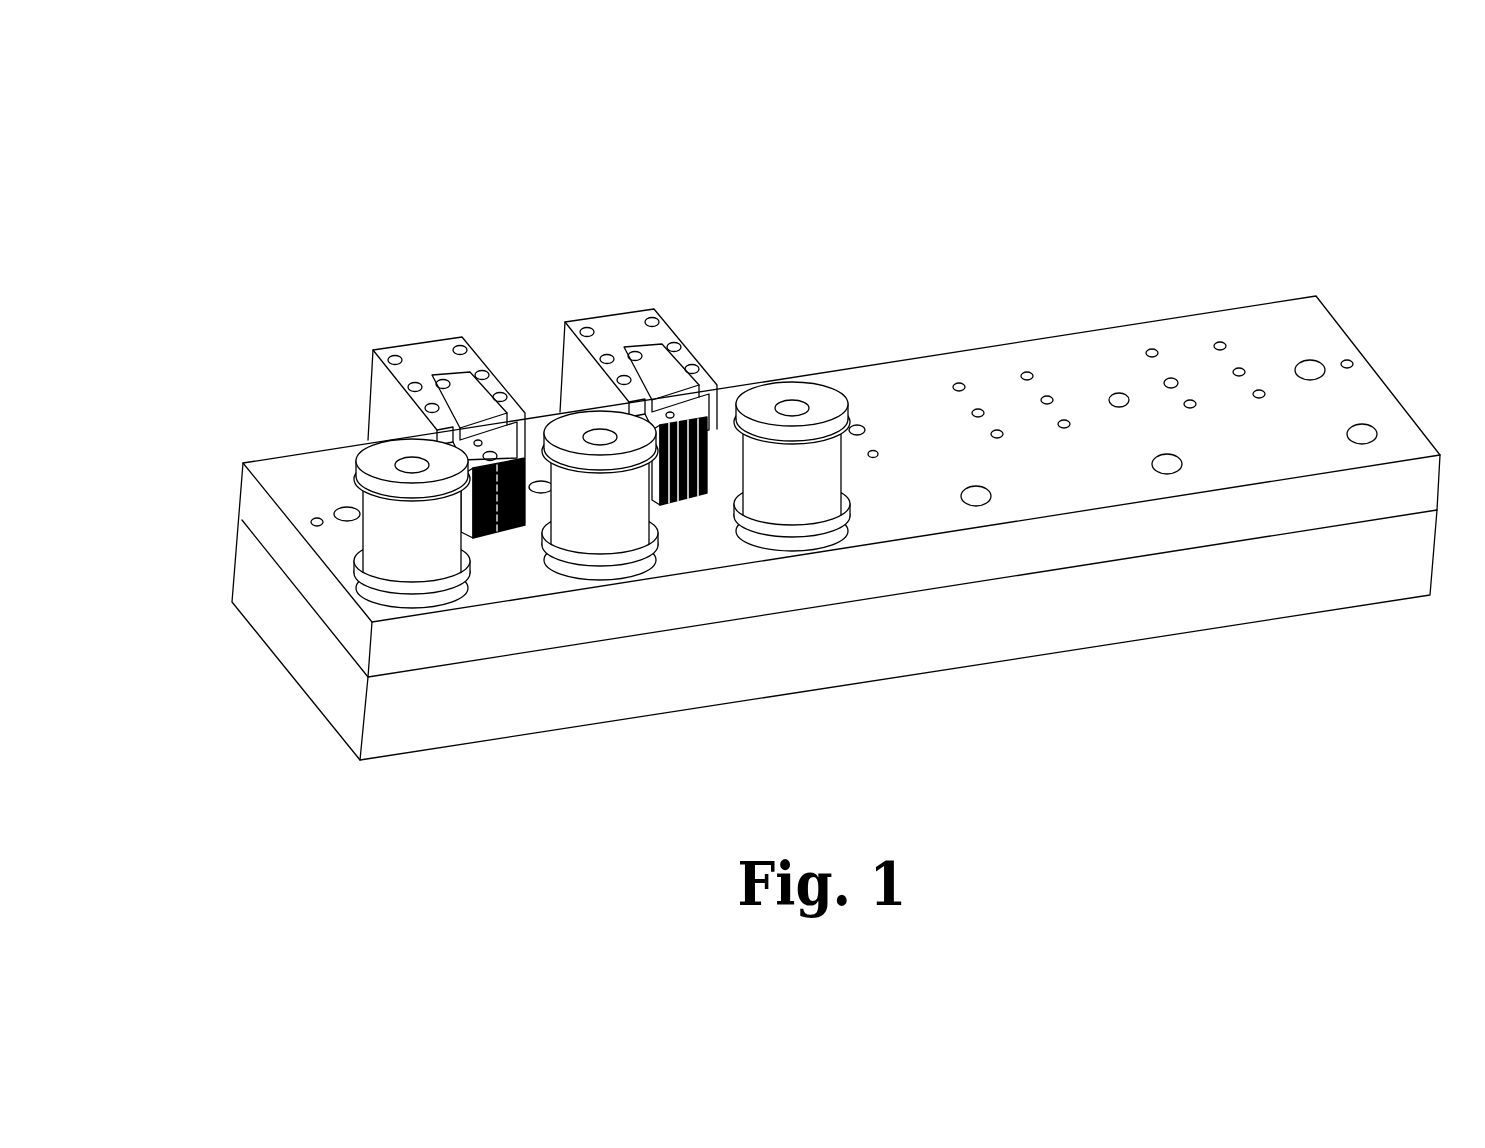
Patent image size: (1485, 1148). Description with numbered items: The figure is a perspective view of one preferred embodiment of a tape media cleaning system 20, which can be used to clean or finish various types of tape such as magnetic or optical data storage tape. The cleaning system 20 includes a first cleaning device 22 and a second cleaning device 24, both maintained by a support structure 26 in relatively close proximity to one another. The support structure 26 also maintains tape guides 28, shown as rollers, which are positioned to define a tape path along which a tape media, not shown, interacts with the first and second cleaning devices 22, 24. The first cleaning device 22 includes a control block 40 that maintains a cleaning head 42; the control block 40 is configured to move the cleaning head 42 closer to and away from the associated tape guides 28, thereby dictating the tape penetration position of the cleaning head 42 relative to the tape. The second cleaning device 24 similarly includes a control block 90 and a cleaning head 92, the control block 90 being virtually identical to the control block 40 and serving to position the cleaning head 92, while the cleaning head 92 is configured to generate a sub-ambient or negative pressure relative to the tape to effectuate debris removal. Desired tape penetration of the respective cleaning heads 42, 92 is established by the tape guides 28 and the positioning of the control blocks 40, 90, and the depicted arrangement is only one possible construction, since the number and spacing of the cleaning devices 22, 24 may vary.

The tape media cleaning system 20 is at (539, 197).
The first cleaning device 22 is at (332, 374).
The second cleaning device 24 is at (675, 270).
The support structure 26 is at (1100, 545).
The tape guides 28 is at (390, 548).
The control block 40 is at (432, 337).
The cleaning head 42 is at (501, 557).
The control block 90 is at (688, 318).
The cleaning head 92 is at (681, 513).